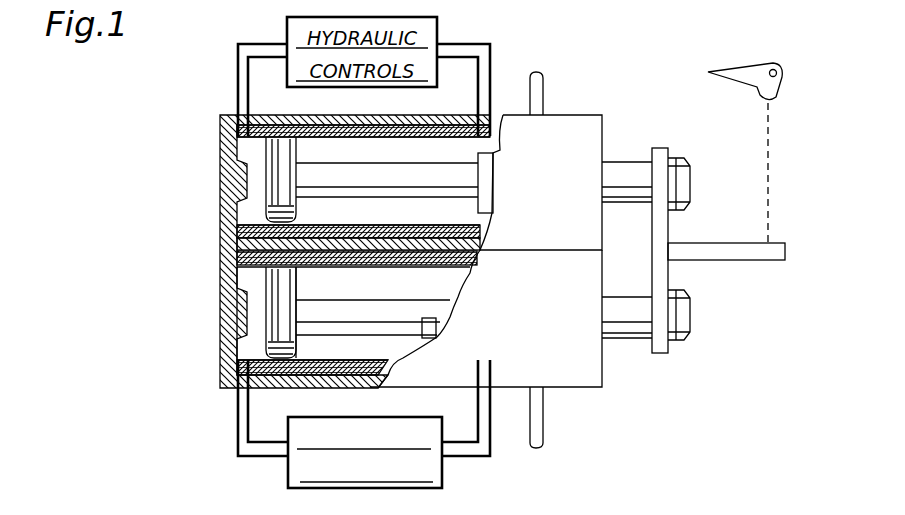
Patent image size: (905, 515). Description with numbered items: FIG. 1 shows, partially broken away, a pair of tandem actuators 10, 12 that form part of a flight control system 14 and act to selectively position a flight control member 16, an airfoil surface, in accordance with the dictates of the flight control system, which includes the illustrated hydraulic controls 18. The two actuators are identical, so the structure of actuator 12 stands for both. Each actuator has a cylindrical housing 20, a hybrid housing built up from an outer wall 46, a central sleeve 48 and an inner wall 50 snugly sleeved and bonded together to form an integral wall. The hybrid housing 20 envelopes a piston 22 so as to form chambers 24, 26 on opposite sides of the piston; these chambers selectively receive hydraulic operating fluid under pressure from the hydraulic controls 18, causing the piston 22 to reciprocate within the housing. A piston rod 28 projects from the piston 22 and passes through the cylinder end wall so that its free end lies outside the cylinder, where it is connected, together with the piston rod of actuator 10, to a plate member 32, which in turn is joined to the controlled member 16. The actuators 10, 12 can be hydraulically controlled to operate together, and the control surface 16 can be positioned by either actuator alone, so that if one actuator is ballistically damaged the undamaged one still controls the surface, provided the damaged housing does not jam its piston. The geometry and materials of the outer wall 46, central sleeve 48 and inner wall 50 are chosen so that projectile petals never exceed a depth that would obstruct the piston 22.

The actuator 10 is at (541, 182).
The actuator 12 is at (486, 319).
The flight control system 14 is at (532, 55).
The flight control member 16 is at (743, 72).
The hydraulic controls 18 is at (433, 478).
The cylindrical housing 20 is at (577, 372).
The piston 22 is at (282, 340).
The chamber 24 is at (258, 312).
The chamber 26 is at (393, 347).
The piston rod 28 is at (423, 322).
The plate member 32 is at (662, 227).
The outer wall 46 is at (238, 218).
The central sleeve 48 is at (237, 249).
The inner wall 50 is at (257, 277).